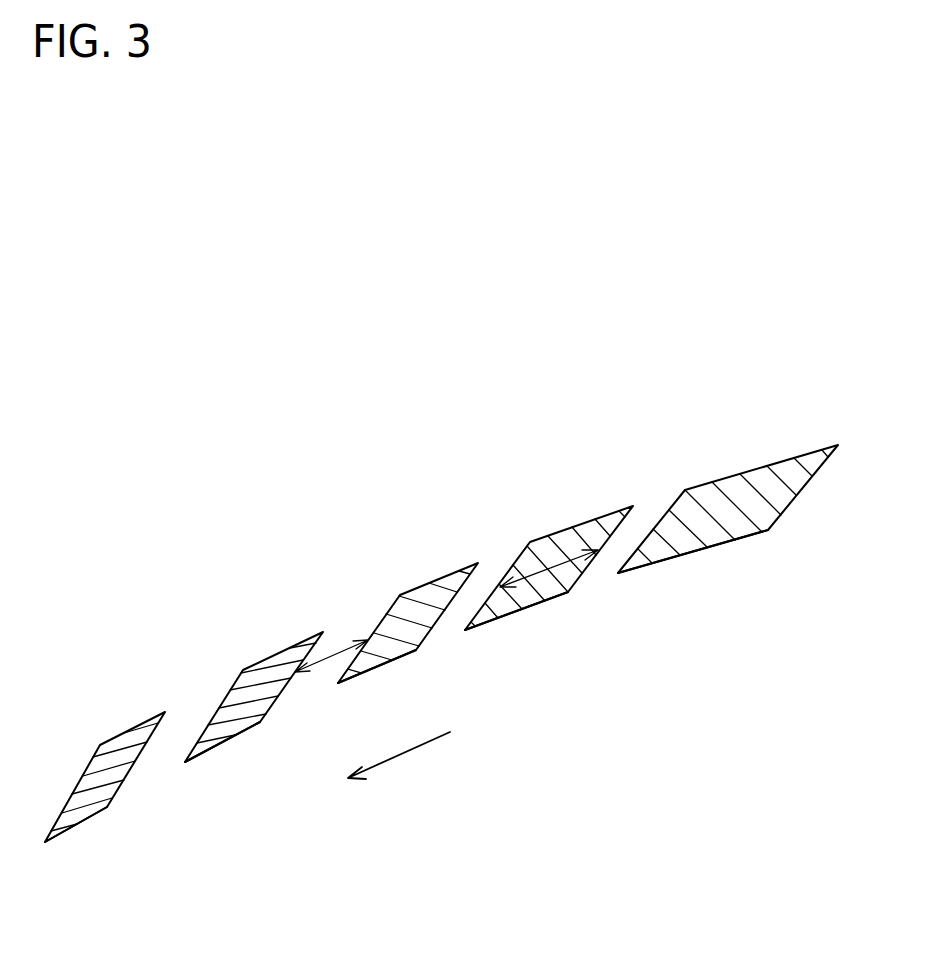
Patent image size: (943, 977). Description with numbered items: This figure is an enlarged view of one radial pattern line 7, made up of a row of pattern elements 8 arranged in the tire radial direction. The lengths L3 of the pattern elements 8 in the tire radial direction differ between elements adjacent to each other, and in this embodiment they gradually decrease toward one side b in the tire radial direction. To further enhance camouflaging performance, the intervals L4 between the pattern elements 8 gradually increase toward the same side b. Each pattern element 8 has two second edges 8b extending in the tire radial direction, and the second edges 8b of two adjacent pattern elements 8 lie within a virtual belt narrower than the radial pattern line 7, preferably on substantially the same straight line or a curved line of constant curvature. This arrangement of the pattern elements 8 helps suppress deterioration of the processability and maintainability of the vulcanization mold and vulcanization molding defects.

The radial pattern line 7 is at (444, 470).
The pattern element 8 is at (105, 775).
The second edge 8b is at (80, 823).
The length in the tire radial direction L3 is at (557, 562).
The interval between the pattern elements L4 is at (330, 655).
The one side in the tire radial direction b is at (388, 762).